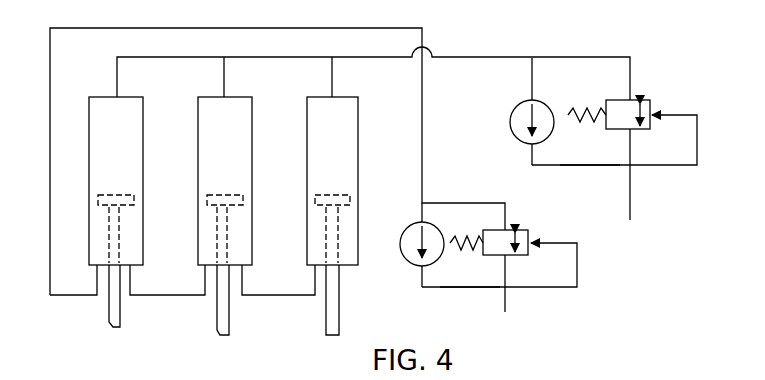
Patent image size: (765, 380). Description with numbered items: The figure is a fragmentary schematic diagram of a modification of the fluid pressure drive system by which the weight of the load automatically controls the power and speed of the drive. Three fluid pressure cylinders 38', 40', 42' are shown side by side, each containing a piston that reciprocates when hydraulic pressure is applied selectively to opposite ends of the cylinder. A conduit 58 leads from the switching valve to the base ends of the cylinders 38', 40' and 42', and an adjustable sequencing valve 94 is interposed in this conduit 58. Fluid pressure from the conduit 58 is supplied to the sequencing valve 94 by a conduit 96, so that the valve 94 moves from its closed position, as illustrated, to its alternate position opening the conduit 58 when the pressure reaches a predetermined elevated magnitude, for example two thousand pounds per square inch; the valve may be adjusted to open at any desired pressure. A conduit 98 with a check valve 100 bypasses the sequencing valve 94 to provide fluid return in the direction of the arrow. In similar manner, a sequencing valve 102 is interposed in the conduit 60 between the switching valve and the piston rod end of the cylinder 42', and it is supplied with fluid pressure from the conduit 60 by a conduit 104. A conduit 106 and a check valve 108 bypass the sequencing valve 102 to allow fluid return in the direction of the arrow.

The conduit 60 is at (50, 125).
The conduit 58 is at (497, 56).
The fluid pressure cylinder 42' is at (127, 212).
The fluid pressure cylinder 40' is at (256, 196).
The fluid pressure cylinder 38' is at (350, 196).
The check valve 100 is at (507, 122).
The adjustable sequencing valve 94 is at (635, 99).
The conduit 96 is at (660, 166).
The conduit 98 is at (600, 168).
The check valve 108 is at (404, 260).
The sequencing valve 102 is at (528, 230).
The conduit 104 is at (577, 265).
The conduit 106 is at (477, 288).